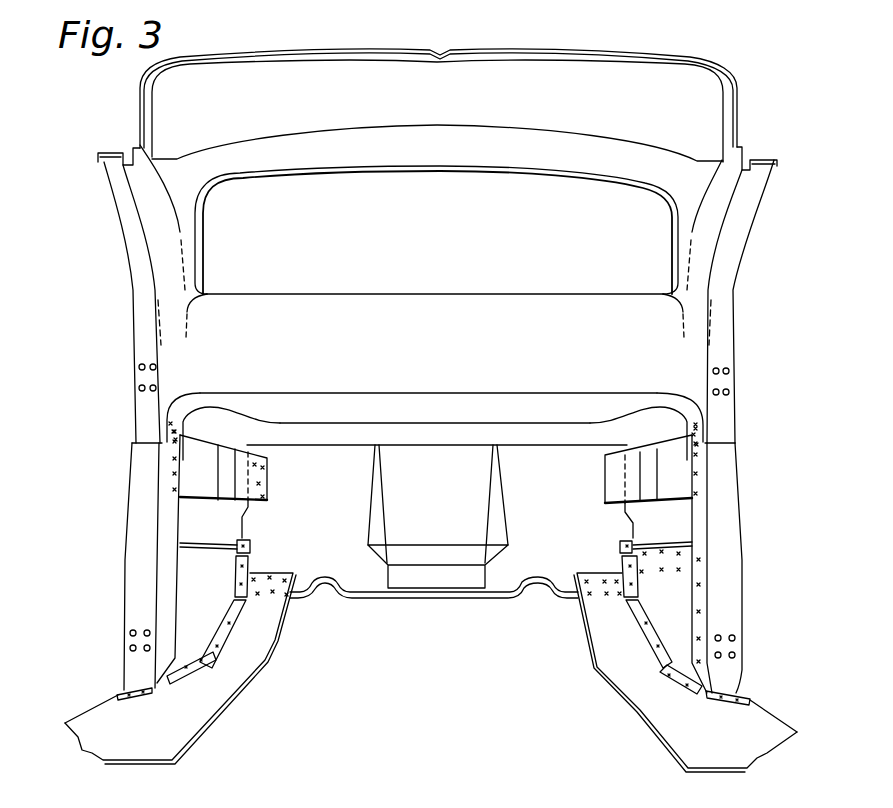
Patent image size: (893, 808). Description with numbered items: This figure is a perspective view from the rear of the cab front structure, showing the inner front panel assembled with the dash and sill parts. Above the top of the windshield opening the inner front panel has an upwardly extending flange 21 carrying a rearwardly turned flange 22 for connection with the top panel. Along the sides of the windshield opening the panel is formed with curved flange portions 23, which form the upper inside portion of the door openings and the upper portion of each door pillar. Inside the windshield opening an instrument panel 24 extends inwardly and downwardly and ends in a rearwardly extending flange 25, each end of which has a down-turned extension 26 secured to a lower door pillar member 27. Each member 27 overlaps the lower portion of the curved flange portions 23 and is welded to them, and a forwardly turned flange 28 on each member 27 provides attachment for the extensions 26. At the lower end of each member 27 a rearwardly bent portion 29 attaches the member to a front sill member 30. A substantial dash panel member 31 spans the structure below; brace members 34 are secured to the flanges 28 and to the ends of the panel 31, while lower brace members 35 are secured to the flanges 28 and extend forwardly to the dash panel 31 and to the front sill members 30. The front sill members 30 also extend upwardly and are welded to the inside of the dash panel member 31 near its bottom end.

The upwardly extending flange 21 is at (448, 80).
The rearwardly turned flange 22 is at (290, 53).
The curved flange portions 23 is at (105, 165).
The instrument panel 24 is at (457, 303).
The rearwardly extending flange 25 is at (433, 412).
The down-turned extension 26 is at (183, 423).
The lower door pillar member 27 is at (140, 530).
The forwardly turned flange 28 is at (172, 520).
The rearwardly bent portion 29 is at (135, 698).
The front sill member 30 is at (173, 738).
The dash panel member 31 is at (540, 563).
The brace members 34 is at (208, 472).
The lower brace members 35 is at (204, 569).